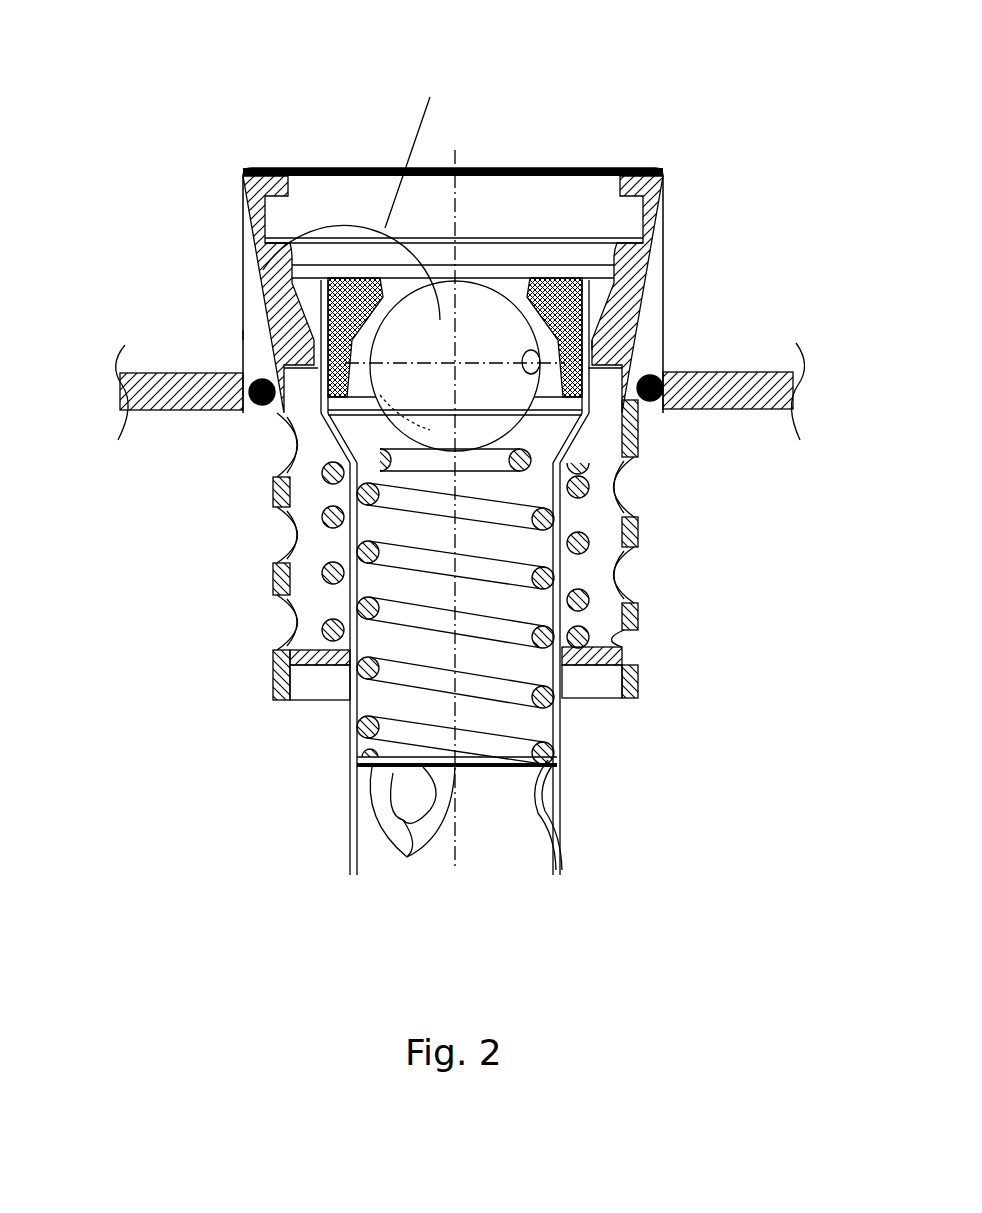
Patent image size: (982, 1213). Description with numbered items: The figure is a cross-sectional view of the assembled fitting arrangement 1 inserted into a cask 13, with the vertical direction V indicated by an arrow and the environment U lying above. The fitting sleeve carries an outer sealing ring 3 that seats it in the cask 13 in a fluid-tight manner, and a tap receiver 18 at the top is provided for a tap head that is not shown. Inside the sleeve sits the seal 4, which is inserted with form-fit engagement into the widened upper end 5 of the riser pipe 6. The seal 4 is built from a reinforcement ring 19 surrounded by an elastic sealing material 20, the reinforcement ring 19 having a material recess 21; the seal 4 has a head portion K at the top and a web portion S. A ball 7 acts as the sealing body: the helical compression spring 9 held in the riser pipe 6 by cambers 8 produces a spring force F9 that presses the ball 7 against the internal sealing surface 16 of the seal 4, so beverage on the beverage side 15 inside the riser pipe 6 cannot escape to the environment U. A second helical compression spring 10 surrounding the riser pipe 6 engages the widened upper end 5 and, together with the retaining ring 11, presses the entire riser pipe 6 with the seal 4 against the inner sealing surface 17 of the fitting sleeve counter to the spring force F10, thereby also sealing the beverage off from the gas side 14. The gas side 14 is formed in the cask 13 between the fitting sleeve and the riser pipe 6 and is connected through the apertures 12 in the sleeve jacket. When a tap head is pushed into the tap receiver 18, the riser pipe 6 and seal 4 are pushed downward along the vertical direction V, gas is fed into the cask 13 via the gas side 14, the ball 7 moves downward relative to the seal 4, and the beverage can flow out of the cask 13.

The fitting arrangement 1 is at (212, 86).
The outer sealing ring 3 is at (243, 383).
The seal 4 is at (345, 272).
The upper end 5 is at (588, 380).
The riser pipe 6 is at (352, 750).
The ball 7 is at (490, 313).
The cambers 8 is at (557, 795).
The helical compression spring 9 is at (508, 688).
The helical compression spring 10 is at (588, 593).
The retaining ring 11 is at (633, 617).
The apertures 12 is at (290, 448).
The cask 13 is at (762, 373).
The gas side 14 is at (610, 427).
The beverage side 15 is at (512, 838).
The internal sealing surface 16 is at (603, 335).
The inner sealing surface 17 is at (297, 336).
The tap receiver 18 is at (636, 212).
The reinforcement ring 19 is at (562, 278).
The elastic sealing material 20 is at (278, 408).
The material recess 21 is at (323, 300).
The head portion K is at (618, 258).
The web portion S is at (598, 362).
The environment U is at (477, 150).
The vertical direction V is at (650, 32).
The spring force F9 is at (480, 533).
The spring force F10 is at (600, 493).